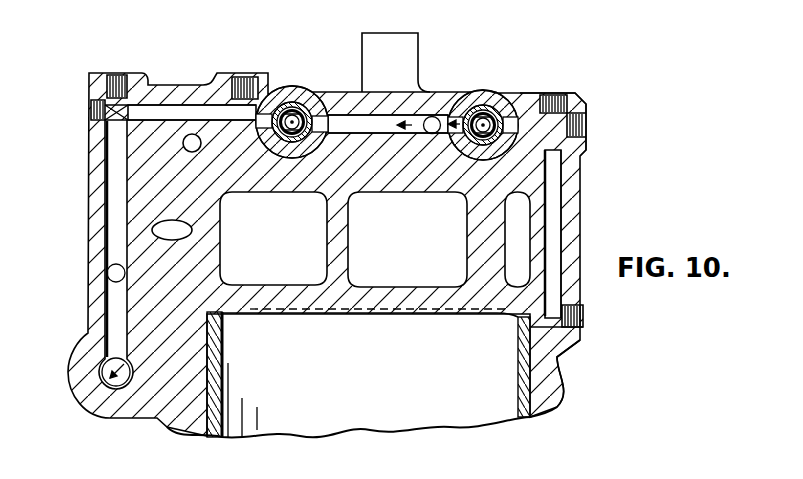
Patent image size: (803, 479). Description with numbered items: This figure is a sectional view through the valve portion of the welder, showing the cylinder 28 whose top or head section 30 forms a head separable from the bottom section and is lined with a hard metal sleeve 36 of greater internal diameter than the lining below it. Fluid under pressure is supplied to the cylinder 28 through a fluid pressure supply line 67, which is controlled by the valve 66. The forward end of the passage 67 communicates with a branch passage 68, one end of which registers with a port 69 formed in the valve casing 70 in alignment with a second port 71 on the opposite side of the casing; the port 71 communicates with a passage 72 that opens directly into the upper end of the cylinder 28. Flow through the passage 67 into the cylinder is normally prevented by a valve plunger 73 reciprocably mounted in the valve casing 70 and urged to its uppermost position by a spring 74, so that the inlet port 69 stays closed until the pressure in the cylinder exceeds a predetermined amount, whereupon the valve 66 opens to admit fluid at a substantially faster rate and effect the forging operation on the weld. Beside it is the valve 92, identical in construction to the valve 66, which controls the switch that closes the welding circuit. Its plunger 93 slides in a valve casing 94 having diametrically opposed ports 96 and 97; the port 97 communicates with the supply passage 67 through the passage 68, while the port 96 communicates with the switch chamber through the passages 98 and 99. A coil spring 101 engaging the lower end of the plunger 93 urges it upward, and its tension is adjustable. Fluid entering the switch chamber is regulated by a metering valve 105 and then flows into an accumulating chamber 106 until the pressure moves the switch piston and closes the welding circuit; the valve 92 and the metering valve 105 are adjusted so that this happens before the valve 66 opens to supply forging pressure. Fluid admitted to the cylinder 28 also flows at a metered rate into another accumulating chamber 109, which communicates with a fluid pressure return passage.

The cylinder 28 is at (498, 368).
The head section 30 is at (173, 425).
The hard metal sleeve 36 is at (523, 393).
The valve 66 is at (508, 94).
The fluid pressure supply line 67 is at (430, 115).
The branch passage 68 is at (383, 123).
The port 69 is at (460, 150).
The valve casing 70 is at (475, 158).
The second port 71 is at (563, 100).
The passage 72 is at (553, 192).
The valve plunger 73 is at (466, 108).
The spring 74 is at (487, 113).
The valve 92 is at (313, 89).
The plunger 93 is at (275, 97).
The valve casing 94 is at (287, 94).
The port 96 is at (255, 150).
The port 97 is at (312, 148).
The passage 98 is at (192, 113).
The passage 99 is at (88, 222).
The coil spring 101 is at (345, 92).
The metering valve 105 is at (80, 408).
The accumulating chamber 106 is at (280, 273).
The accumulating chamber 109 is at (378, 272).